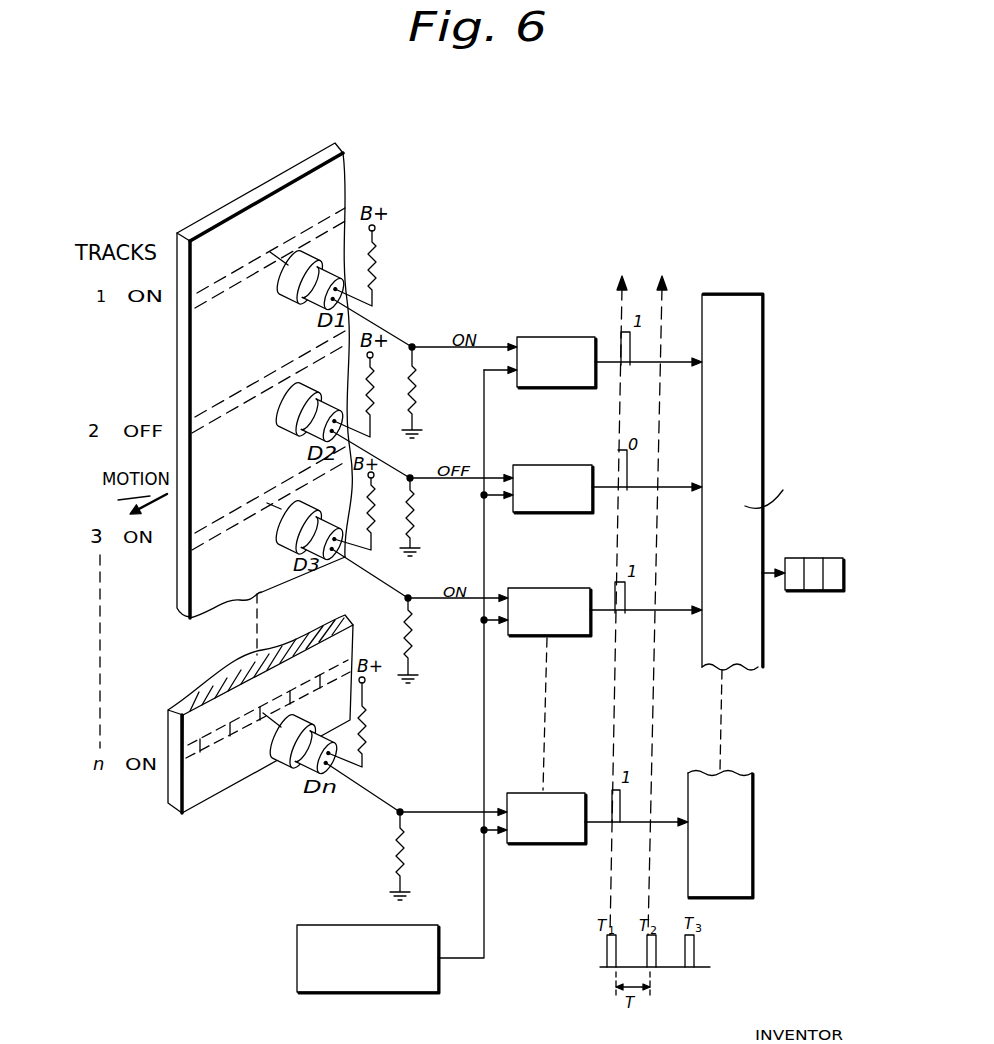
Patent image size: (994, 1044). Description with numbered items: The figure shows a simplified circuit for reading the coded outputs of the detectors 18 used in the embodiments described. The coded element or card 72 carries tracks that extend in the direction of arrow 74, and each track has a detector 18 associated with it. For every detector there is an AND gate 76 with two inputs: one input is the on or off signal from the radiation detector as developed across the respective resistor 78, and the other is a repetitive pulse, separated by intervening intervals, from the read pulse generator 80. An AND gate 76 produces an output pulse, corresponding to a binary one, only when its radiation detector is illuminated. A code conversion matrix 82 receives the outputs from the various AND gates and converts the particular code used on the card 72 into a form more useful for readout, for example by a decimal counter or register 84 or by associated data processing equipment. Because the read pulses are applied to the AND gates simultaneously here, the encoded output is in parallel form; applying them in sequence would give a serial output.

The coded element or card 72 is at (271, 184).
The detector 18 is at (291, 298).
The arrow 74 is at (122, 505).
The AND gate 76 is at (568, 339).
The resistor 78 is at (415, 388).
The read pulse generator 80 is at (350, 925).
The code conversion matrix 82 is at (765, 388).
The decimal counter or register 84 is at (818, 595).